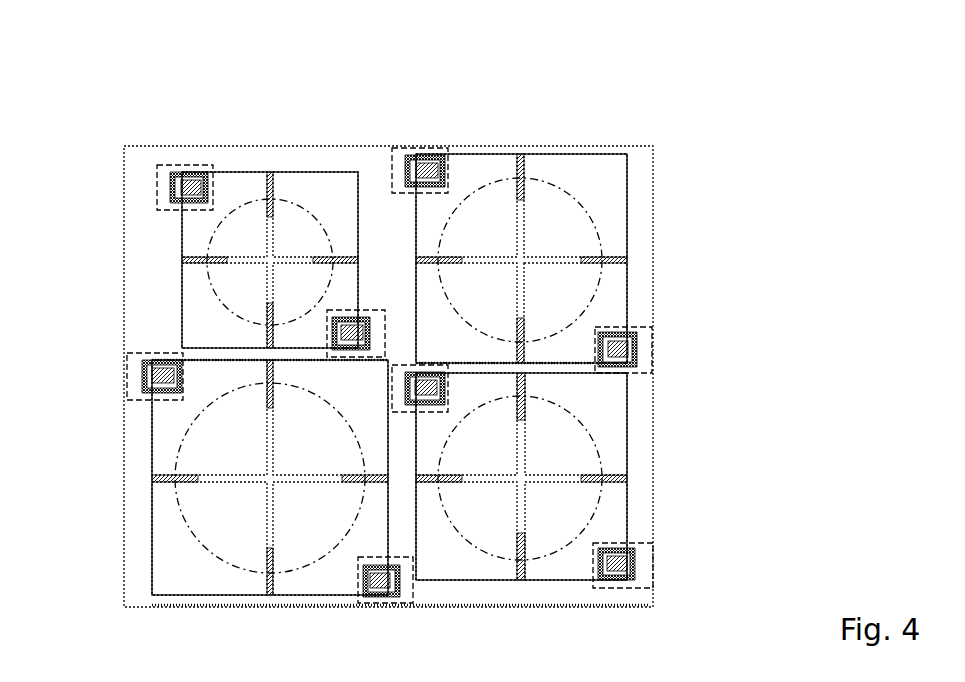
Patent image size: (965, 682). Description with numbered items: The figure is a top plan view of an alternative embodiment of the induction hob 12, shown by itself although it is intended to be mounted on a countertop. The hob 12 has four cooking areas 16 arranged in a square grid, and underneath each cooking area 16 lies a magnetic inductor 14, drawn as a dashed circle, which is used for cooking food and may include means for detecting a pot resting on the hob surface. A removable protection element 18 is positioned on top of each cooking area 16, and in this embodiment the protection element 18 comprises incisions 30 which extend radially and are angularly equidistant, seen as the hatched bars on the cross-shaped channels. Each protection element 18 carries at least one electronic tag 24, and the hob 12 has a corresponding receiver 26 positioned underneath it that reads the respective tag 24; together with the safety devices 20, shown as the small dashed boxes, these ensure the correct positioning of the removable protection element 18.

The induction hob 12 is at (135, 598).
The magnetic inductor 14 is at (296, 197).
The cooking area 16 is at (607, 220).
The removable protection element 18 is at (283, 167).
The safety device 20 is at (178, 157).
The electronic tag 24 is at (198, 185).
The receiver 26 is at (447, 167).
The incisions 30 is at (520, 157).